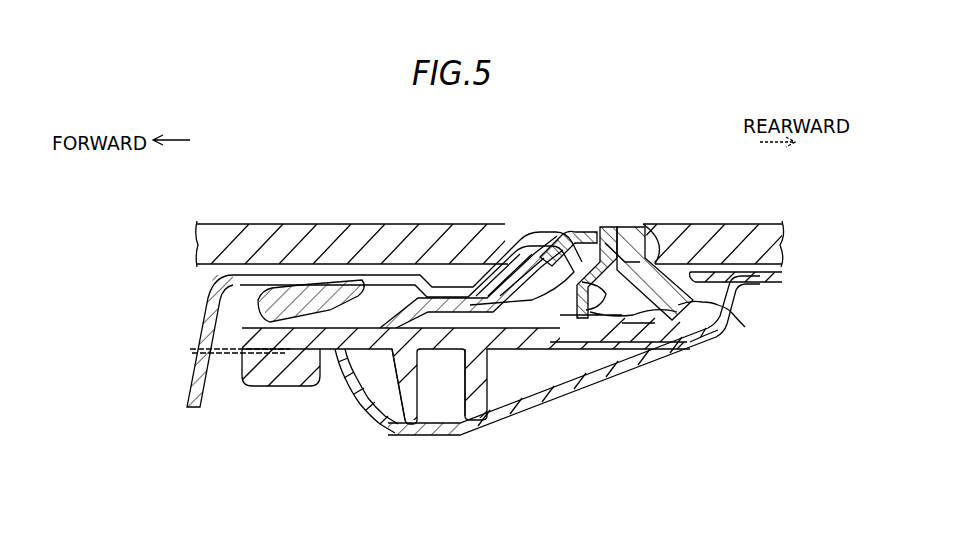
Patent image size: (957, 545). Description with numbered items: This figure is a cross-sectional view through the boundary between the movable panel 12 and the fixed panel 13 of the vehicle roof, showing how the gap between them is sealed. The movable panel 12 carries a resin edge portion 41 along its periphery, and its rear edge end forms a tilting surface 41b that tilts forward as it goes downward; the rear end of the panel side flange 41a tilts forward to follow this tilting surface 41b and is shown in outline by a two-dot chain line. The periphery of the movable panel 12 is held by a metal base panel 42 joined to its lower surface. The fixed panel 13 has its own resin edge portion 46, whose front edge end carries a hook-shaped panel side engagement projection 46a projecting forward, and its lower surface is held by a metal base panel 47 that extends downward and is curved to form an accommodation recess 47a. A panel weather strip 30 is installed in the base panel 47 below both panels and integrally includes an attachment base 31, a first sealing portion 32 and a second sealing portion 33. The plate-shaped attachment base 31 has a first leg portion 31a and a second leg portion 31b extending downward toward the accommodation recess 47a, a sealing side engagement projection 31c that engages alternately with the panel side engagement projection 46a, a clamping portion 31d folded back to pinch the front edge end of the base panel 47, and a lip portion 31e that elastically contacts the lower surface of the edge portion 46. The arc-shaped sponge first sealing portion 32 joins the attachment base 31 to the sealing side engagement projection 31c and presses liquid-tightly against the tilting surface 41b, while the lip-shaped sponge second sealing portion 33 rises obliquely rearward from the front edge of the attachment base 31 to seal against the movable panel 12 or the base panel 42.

The movable panel 12 is at (378, 224).
The fixed panel 13 is at (703, 224).
The panel weather strip 30 is at (593, 223).
The attachment base 31 is at (503, 348).
The first leg portion 31a is at (403, 430).
The second leg portion 31b is at (470, 432).
The sealing side engagement projection 31c is at (615, 245).
The clamping portion 31d is at (287, 385).
The lip portion 31e is at (722, 326).
The first sealing portion 32 is at (536, 228).
The second sealing portion 33 is at (334, 280).
The edge portion 41 is at (510, 230).
The panel side flange 41a is at (228, 355).
The tilting surface 41b is at (548, 255).
The base panel 42 is at (212, 308).
The edge portion 46 is at (642, 227).
The panel side engagement projection 46a is at (580, 345).
The base panel 47 is at (628, 383).
The accommodation recess 47a is at (347, 392).